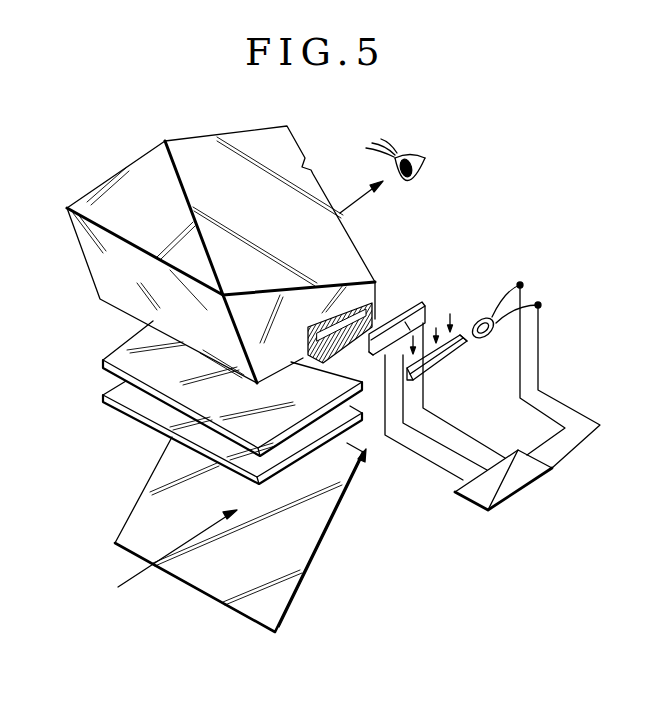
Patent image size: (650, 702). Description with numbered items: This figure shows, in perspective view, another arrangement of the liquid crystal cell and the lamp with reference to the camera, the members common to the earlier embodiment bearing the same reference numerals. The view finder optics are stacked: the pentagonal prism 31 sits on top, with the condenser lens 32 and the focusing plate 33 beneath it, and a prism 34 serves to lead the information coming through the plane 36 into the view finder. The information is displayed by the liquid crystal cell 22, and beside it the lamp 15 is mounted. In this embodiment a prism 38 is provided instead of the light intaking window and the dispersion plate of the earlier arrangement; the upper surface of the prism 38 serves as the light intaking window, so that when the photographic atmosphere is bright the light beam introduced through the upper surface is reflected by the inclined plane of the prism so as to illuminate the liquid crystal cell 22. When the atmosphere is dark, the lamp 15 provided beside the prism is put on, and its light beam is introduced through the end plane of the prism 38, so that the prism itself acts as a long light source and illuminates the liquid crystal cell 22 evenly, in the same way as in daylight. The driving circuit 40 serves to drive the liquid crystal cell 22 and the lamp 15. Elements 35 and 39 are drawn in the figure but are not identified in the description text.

The pentagonal prism 31 is at (292, 143).
The condenser lens 32 is at (103, 364).
The focusing plate 33 is at (143, 424).
The prism 34 is at (233, 602).
The light guide plate 35 is at (373, 325).
The plane 36 is at (380, 290).
The liquid crystal cell 22 is at (427, 305).
The prism 38 is at (436, 370).
The reflector 39 is at (450, 349).
The lamp 15 is at (486, 335).
The driving circuit 40 is at (517, 498).